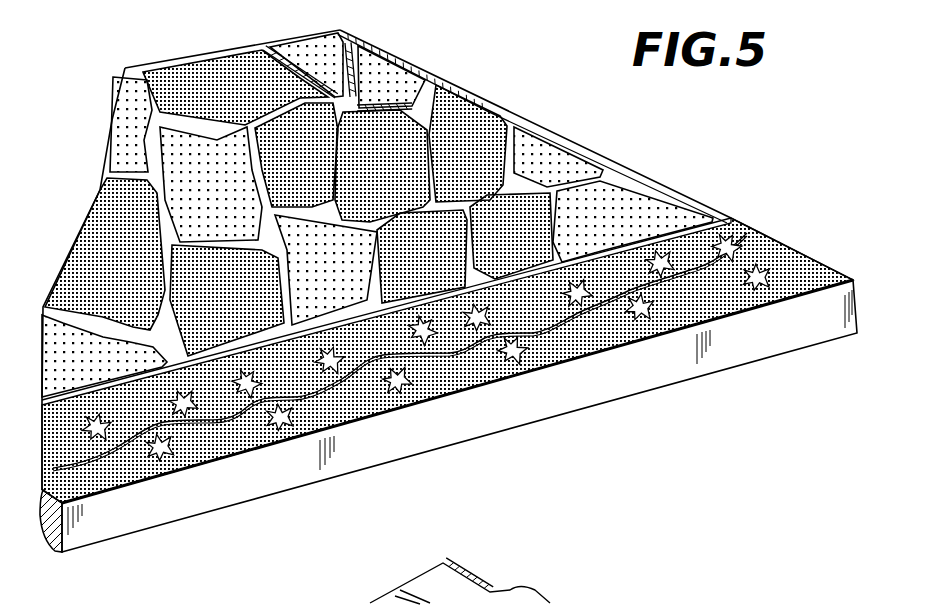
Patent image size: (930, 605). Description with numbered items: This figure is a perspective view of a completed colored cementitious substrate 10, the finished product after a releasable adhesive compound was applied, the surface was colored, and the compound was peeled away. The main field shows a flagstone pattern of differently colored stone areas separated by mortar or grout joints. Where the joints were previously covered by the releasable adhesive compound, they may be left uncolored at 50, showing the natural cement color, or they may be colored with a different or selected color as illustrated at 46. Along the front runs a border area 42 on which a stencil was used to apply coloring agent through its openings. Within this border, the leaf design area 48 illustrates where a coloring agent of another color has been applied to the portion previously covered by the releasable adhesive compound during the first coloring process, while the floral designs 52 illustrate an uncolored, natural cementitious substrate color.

The cementitious substrate 10 is at (467, 458).
The border area 42 is at (794, 268).
The colored mortar or grout joint area 46 is at (407, 112).
The colored leaf design area 48 is at (740, 240).
The uncolored mortar or grout joint area 50 is at (137, 73).
The floral designs 52 is at (163, 478).